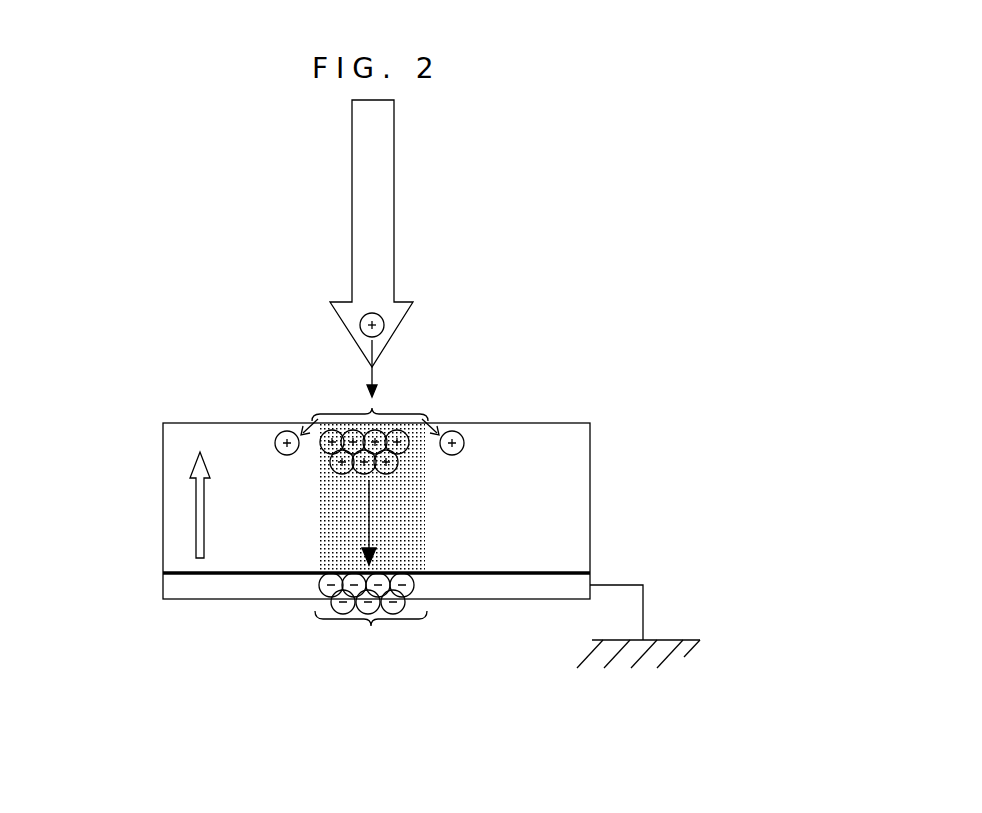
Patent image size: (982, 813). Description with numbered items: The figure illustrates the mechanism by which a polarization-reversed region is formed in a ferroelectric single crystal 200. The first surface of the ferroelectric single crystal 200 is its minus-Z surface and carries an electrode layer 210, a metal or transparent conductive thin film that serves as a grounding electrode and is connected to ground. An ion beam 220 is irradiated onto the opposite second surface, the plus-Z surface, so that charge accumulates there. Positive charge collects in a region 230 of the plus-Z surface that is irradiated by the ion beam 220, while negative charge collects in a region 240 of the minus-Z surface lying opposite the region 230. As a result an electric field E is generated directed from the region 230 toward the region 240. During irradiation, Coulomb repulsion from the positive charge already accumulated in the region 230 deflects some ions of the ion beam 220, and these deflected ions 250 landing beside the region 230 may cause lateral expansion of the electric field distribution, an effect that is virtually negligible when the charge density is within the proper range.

The ferroelectric single crystal 200 is at (565, 505).
The electrode layer 210 is at (192, 585).
The ion beam 220 is at (415, 287).
The region 230 is at (370, 429).
The region 240 is at (371, 618).
The deflected ions 250 is at (276, 430).